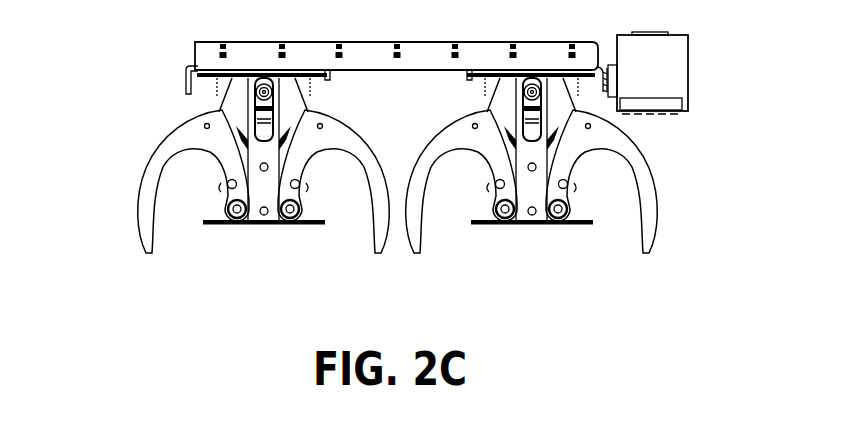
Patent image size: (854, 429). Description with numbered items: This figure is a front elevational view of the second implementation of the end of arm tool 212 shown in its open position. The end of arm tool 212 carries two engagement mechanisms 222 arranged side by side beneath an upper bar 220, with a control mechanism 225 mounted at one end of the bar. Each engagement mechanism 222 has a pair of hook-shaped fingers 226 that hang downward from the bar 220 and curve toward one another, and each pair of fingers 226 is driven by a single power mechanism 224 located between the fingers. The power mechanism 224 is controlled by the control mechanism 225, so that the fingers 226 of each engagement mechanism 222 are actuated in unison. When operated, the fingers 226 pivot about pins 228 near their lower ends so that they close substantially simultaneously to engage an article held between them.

The end of arm tool 212 is at (138, 43).
The mounting bar 220 is at (217, 46).
The engagement mechanism 222 is at (431, 276).
The power mechanism 224 is at (525, 135).
The control mechanism 225 is at (680, 40).
The fingers 226 is at (330, 113).
The pins 228 is at (278, 223).